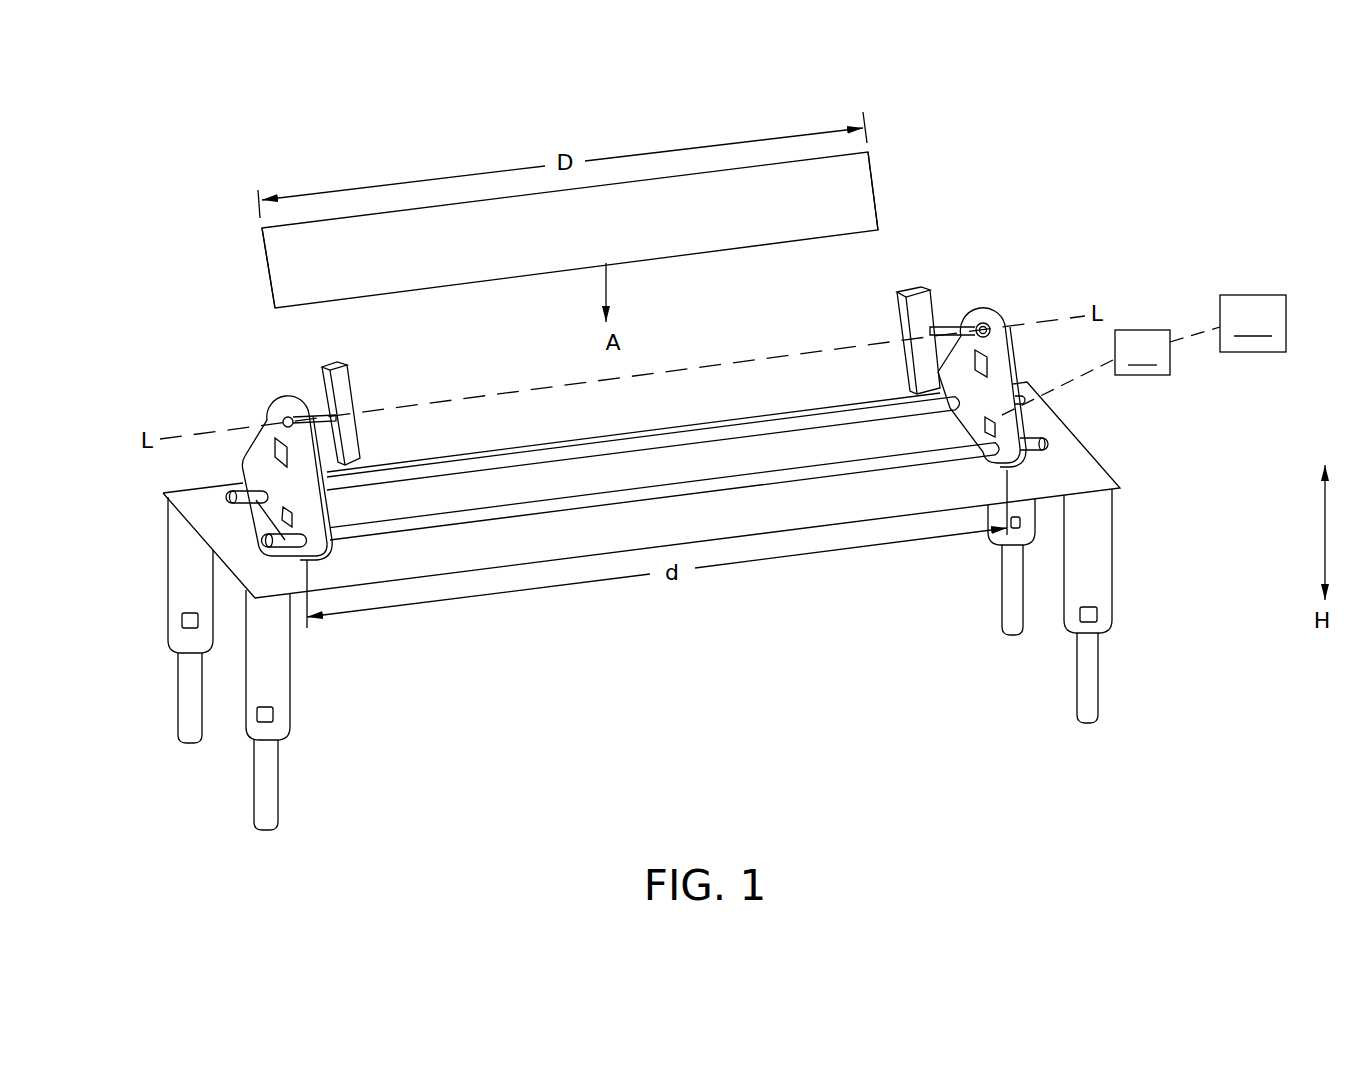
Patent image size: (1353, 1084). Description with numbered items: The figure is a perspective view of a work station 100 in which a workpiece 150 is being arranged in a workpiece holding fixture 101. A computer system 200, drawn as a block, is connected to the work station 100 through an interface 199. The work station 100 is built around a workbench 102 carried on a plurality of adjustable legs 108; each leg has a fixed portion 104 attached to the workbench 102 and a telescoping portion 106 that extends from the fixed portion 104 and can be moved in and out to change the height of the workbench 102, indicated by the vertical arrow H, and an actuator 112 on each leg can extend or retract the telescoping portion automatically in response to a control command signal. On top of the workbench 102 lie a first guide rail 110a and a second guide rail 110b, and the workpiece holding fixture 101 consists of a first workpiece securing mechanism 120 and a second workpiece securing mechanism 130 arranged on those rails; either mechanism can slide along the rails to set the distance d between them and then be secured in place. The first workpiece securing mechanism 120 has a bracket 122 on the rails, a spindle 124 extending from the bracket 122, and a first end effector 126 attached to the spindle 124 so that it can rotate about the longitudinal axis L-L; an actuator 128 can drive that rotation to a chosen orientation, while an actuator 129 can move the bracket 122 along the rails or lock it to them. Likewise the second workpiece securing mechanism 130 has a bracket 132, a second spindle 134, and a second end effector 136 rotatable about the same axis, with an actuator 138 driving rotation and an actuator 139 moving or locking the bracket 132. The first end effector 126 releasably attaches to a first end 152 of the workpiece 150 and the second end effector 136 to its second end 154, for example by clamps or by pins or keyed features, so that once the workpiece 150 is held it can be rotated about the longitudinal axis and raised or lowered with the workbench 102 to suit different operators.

The work station 100 is at (1120, 255).
The workpiece holding fixture 101 is at (950, 275).
The workbench 102 is at (1097, 480).
The fixed portion 104 is at (177, 537).
The telescoping portion 106 is at (188, 690).
The adjustable legs 108 is at (133, 662).
The first guide rail 110a is at (678, 484).
The second guide rail 110b is at (746, 425).
The actuator 112 is at (192, 612).
The first workpiece securing mechanism 120 is at (258, 410).
The bracket 122 is at (283, 406).
The spindle 124 is at (315, 403).
The first end effector 126 is at (350, 388).
The actuator 128 is at (272, 446).
The actuator 129 is at (283, 513).
The second workpiece securing mechanism 130 is at (993, 305).
The bracket 132 is at (1003, 415).
The second spindle 134 is at (960, 325).
The second end effector 136 is at (915, 308).
The actuator 138 is at (990, 372).
The actuator 139 is at (985, 425).
The workpiece 150 is at (745, 223).
The first end 152 is at (283, 258).
The second end 154 is at (855, 203).
The interface 199 is at (1084, 373).
The computer system 200 is at (1228, 323).